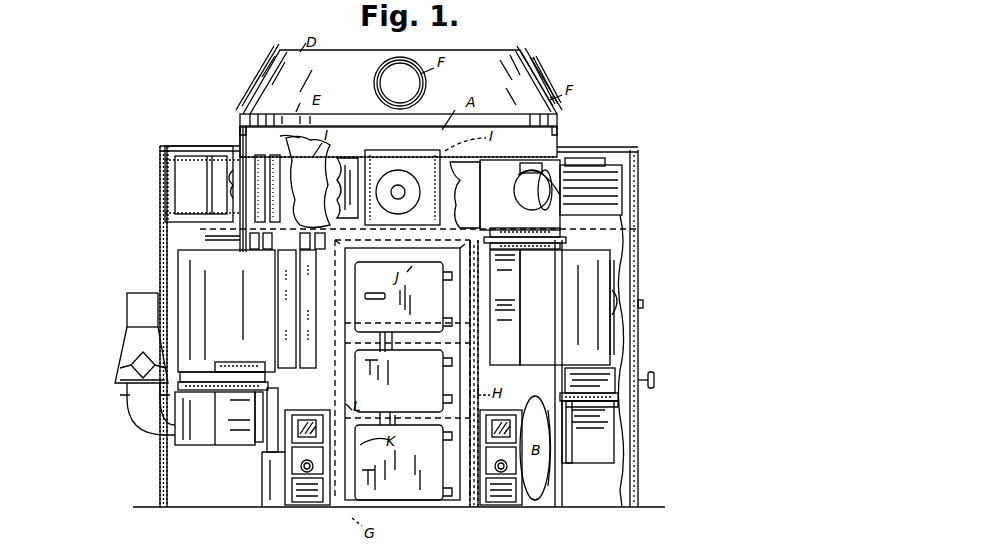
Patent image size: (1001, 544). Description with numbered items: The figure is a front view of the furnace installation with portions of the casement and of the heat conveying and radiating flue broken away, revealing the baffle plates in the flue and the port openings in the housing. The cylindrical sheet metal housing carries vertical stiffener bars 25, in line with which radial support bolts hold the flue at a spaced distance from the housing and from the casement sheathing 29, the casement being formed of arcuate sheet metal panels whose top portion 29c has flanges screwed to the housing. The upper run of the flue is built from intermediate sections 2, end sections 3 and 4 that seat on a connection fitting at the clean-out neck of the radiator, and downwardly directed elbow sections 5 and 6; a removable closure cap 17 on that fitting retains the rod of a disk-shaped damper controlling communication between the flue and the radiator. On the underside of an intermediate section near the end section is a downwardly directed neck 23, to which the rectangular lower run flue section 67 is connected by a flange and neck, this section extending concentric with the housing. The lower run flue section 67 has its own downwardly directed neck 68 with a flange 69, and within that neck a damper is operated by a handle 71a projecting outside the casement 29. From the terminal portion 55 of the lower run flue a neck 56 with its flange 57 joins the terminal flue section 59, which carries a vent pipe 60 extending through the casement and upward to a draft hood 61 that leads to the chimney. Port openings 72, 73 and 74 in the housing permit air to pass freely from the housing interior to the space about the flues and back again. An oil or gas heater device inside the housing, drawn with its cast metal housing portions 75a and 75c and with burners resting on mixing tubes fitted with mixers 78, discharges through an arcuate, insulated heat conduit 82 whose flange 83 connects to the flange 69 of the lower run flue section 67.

The intermediate flue section 2 is at (160, 149).
The end flue section 3 is at (195, 224).
The end flue section 4 is at (165, 316).
The elbow flue section 5 is at (80, 99).
The elbow flue section 6 is at (709, 101).
The removable closure cap 17 is at (392, 178).
The downwardly directed neck 23 is at (565, 236).
The vertical stiffener bar 25 is at (297, 110).
The casement sheathing 29 is at (636, 262).
The top portion of casement 29c is at (596, 149).
The terminal portion of lower run flue 55 is at (235, 325).
The neck 56 is at (215, 380).
The flange 57 is at (265, 378).
The terminal flue section 59 is at (190, 440).
The vent pipe 60 is at (150, 436).
The draft hood 61 is at (123, 358).
The lower run flue section 67 is at (600, 288).
The downwardly directed neck 68 is at (592, 365).
The flange 69 is at (636, 392).
The damper handle 71a is at (665, 385).
The port opening 72 is at (347, 131).
The port opening 73 is at (265, 240).
The port opening 74 is at (279, 408).
The control panel 75a is at (300, 440).
The panel frame 75c is at (312, 503).
The mixer 78 is at (302, 490).
The heat conduit 82 is at (612, 448).
The flange 83 is at (605, 403).